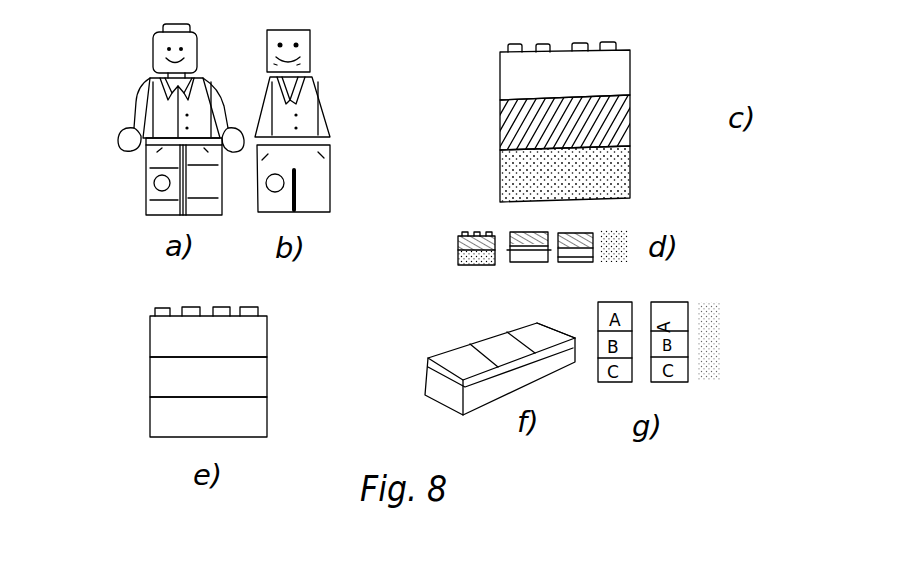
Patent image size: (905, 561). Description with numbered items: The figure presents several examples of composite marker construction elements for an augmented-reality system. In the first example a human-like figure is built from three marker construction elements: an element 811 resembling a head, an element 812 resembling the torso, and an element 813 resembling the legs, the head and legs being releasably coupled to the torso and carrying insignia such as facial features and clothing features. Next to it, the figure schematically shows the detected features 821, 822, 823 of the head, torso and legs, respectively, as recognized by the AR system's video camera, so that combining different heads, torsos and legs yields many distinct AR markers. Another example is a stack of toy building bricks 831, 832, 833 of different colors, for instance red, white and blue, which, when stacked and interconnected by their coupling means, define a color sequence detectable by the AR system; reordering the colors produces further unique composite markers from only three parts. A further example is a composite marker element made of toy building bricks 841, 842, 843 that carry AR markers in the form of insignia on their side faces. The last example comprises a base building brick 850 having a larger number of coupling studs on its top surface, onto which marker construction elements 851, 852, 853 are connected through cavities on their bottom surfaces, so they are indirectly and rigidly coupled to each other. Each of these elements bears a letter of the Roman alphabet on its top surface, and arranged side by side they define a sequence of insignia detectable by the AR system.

The head element 811 is at (152, 45).
The torso element 812 is at (141, 103).
The legs element 813 is at (152, 190).
The detected features of the head 821 is at (313, 48).
The detected features of the torso 822 is at (322, 107).
The detected features of the legs 823 is at (332, 175).
The toy building brick 831 is at (636, 70).
The toy building brick 832 is at (632, 118).
The toy building brick 833 is at (633, 170).
The toy building brick 841 is at (273, 337).
The toy building brick 842 is at (272, 378).
The toy building brick 843 is at (272, 415).
The base building brick 850 is at (480, 390).
The marker construction element 851 is at (447, 362).
The marker construction element 852 is at (485, 335).
The marker construction element 853 is at (533, 322).